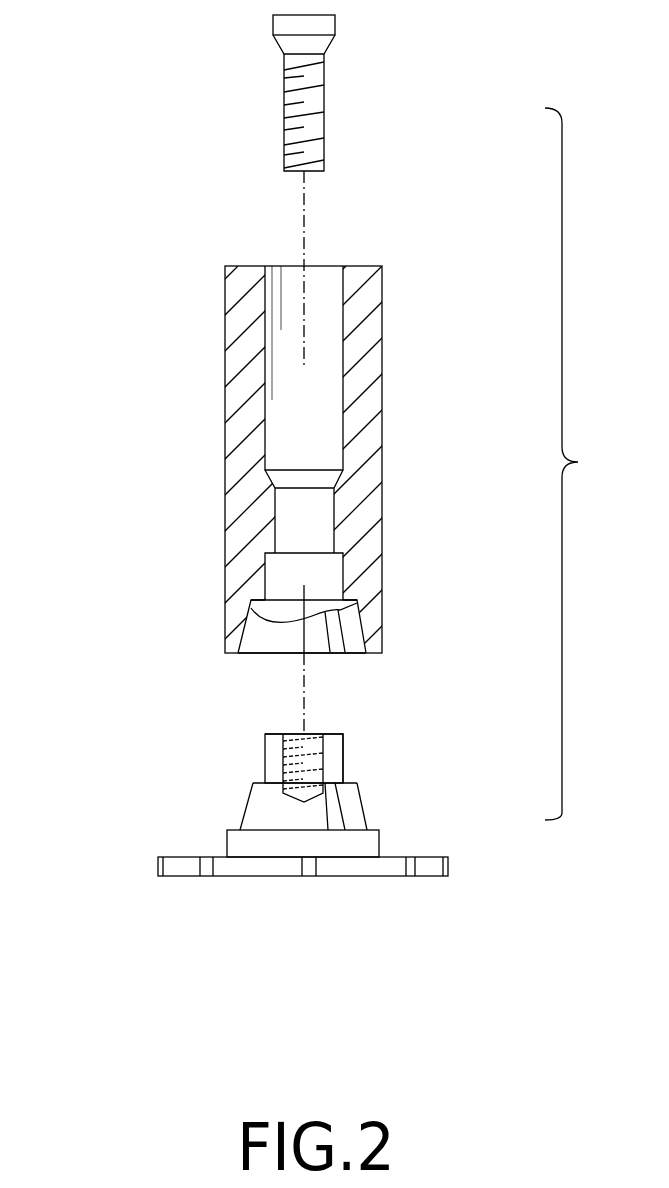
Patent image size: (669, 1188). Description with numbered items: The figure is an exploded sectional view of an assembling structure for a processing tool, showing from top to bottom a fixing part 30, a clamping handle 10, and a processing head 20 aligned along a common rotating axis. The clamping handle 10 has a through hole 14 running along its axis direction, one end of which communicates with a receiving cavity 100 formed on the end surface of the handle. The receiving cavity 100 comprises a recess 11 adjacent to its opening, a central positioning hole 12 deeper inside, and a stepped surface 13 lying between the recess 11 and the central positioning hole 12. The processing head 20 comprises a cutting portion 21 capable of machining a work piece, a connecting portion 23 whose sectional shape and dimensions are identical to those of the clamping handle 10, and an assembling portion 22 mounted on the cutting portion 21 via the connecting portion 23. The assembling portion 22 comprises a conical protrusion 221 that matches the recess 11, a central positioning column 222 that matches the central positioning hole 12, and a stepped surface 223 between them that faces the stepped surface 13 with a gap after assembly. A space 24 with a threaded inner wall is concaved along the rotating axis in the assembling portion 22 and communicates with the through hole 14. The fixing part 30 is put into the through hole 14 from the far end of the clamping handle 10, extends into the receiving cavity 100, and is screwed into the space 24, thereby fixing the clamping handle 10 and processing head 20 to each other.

The clamping handle 10 is at (407, 300).
The recess 11 is at (248, 638).
The central positioning hole 12 is at (268, 568).
The stepped surface 13 is at (350, 603).
The through hole 14 is at (278, 280).
The receiving cavity 100 is at (361, 667).
The processing head 20 is at (118, 776).
The cutting portion 21 is at (180, 876).
The assembling portion 22 is at (329, 749).
The protrusion 221 is at (250, 790).
The central positioning column 222 is at (345, 747).
The stepped surface 223 is at (352, 778).
The connecting portion 23 is at (238, 837).
The space 24 is at (292, 735).
The fixing part 30 is at (315, 102).